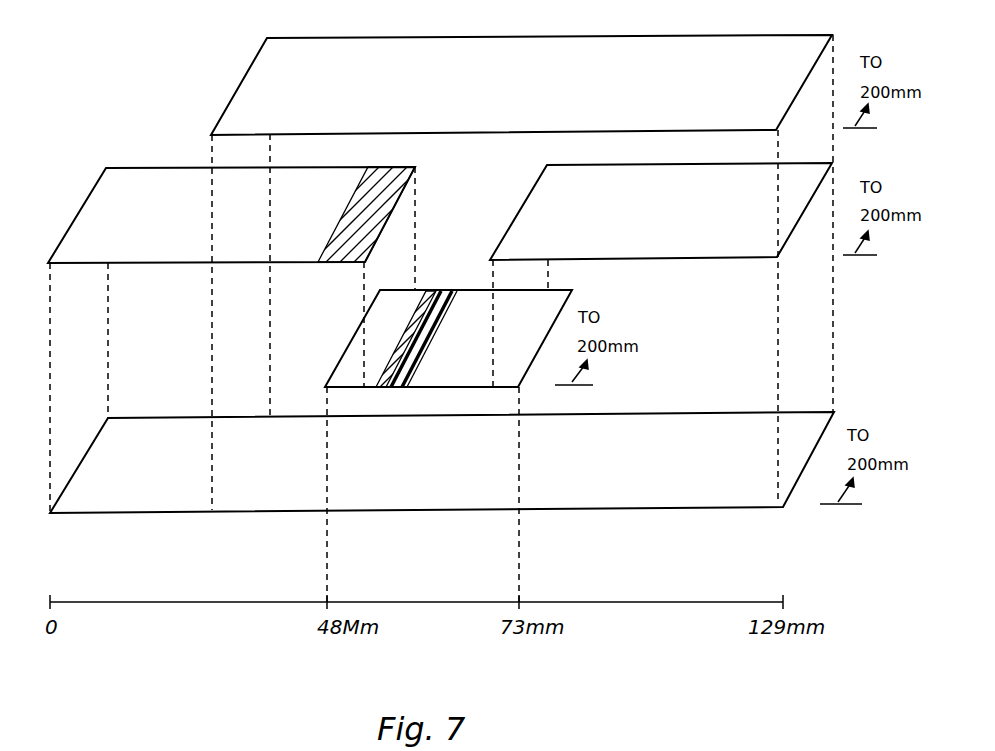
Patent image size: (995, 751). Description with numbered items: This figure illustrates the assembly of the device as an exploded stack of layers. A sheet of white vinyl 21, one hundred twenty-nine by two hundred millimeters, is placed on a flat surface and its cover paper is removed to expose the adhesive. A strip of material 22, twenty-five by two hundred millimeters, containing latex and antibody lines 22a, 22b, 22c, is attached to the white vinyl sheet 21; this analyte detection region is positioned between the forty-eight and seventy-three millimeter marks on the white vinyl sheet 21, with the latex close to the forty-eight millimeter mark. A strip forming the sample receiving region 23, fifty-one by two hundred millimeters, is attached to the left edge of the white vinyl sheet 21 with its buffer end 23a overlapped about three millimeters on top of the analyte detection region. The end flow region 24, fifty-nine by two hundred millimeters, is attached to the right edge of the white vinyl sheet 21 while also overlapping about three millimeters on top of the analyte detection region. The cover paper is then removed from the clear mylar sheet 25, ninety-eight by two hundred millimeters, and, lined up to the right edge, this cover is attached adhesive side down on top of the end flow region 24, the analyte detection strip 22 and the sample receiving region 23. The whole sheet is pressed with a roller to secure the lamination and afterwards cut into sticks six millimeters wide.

The white vinyl sheet 21 is at (432, 466).
The strip of material containing latex and antibody lines 22 is at (536, 327).
The latex line 22a is at (433, 291).
The antibody line 22b is at (447, 291).
The antibody line 22c is at (407, 388).
The sample receiving region strip 23 is at (285, 218).
The buffer end 23a is at (403, 165).
The end flow region 24 is at (665, 220).
The clear mylar sheet 25 is at (527, 95).